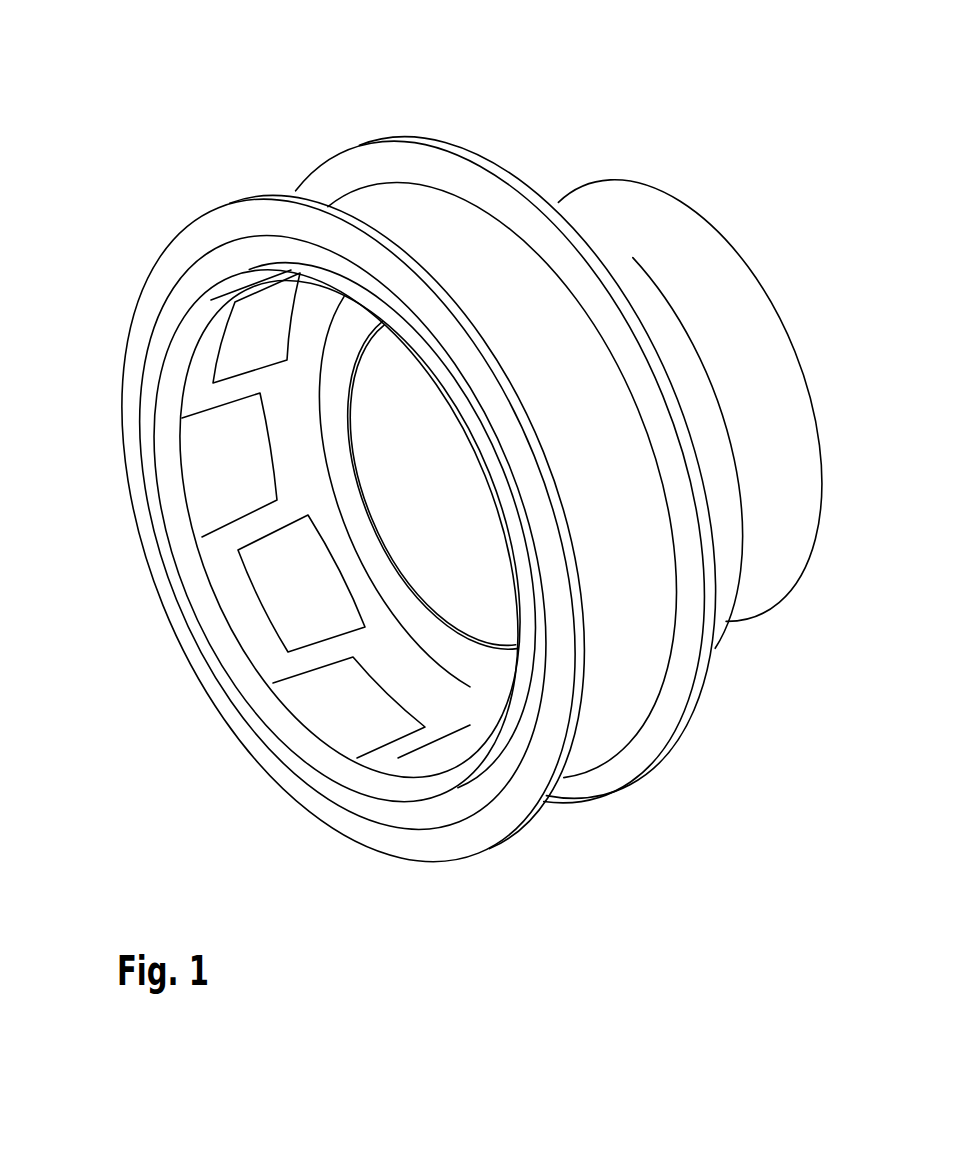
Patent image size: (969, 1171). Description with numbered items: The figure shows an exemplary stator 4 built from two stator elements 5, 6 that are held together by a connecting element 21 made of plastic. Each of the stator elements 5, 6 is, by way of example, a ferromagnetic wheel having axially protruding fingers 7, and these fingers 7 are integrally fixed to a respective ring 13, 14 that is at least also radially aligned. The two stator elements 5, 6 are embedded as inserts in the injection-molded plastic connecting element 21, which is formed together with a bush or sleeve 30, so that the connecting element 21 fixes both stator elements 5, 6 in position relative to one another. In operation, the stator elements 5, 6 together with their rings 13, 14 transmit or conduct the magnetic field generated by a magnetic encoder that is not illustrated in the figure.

The stator 4 is at (420, 492).
The stator element 5 is at (172, 497).
The stator element 6 is at (305, 333).
The fingers 7 is at (290, 598).
The ring 13 is at (483, 830).
The ring 14 is at (622, 772).
The connecting element 21 is at (195, 398).
The bush or sleeve 30 is at (742, 300).